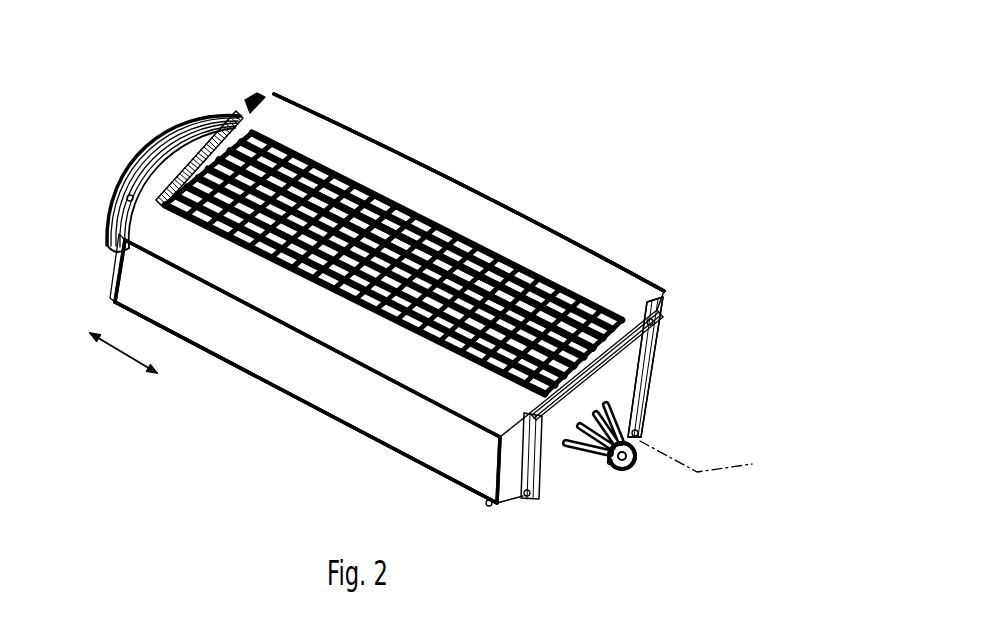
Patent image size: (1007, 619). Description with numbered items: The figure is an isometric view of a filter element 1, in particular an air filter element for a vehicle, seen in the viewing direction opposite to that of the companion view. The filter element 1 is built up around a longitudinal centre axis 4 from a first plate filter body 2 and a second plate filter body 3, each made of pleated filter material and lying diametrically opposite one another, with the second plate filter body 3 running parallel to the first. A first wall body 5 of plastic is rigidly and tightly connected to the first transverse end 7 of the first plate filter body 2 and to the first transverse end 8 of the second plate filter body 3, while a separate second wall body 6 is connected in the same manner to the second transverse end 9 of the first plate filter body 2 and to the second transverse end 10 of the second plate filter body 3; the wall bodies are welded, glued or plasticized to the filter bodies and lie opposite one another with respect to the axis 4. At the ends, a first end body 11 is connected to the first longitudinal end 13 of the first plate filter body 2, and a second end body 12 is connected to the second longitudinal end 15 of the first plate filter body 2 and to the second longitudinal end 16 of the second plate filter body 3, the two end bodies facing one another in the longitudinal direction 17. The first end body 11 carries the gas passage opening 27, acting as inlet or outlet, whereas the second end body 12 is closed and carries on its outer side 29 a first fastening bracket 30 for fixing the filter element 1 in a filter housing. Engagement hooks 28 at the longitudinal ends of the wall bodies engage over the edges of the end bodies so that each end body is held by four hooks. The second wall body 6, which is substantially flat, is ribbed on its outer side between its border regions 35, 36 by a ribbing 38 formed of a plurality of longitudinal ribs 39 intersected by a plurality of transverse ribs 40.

The filter element 1 is at (664, 159).
The first plate filter body 2 is at (224, 346).
The second plate filter body 3 is at (665, 368).
The longitudinal centre axis 4 is at (704, 457).
The first wall body 5 is at (270, 405).
The second wall body 6 is at (537, 209).
The first transverse end 7 is at (323, 410).
The first transverse end 8 is at (648, 392).
The second transverse end 9 is at (308, 346).
The second transverse end 10 is at (478, 191).
The first end body 11 is at (228, 107).
The second end body 12 is at (560, 466).
The first longitudinal end 13 is at (118, 279).
The second longitudinal end 15 is at (513, 467).
The second longitudinal end 16 is at (657, 351).
The longitudinal direction 17 is at (123, 357).
The gas passage opening 27 is at (148, 146).
The engagement hooks 28 is at (247, 102).
The outer side 29 is at (622, 362).
The first fastening bracket 30 is at (637, 460).
The border region 35 is at (430, 382).
The border region 36 is at (582, 273).
The ribbing 38 is at (402, 207).
The longitudinal ribs 39 is at (355, 176).
The transverse ribs 40 is at (295, 180).